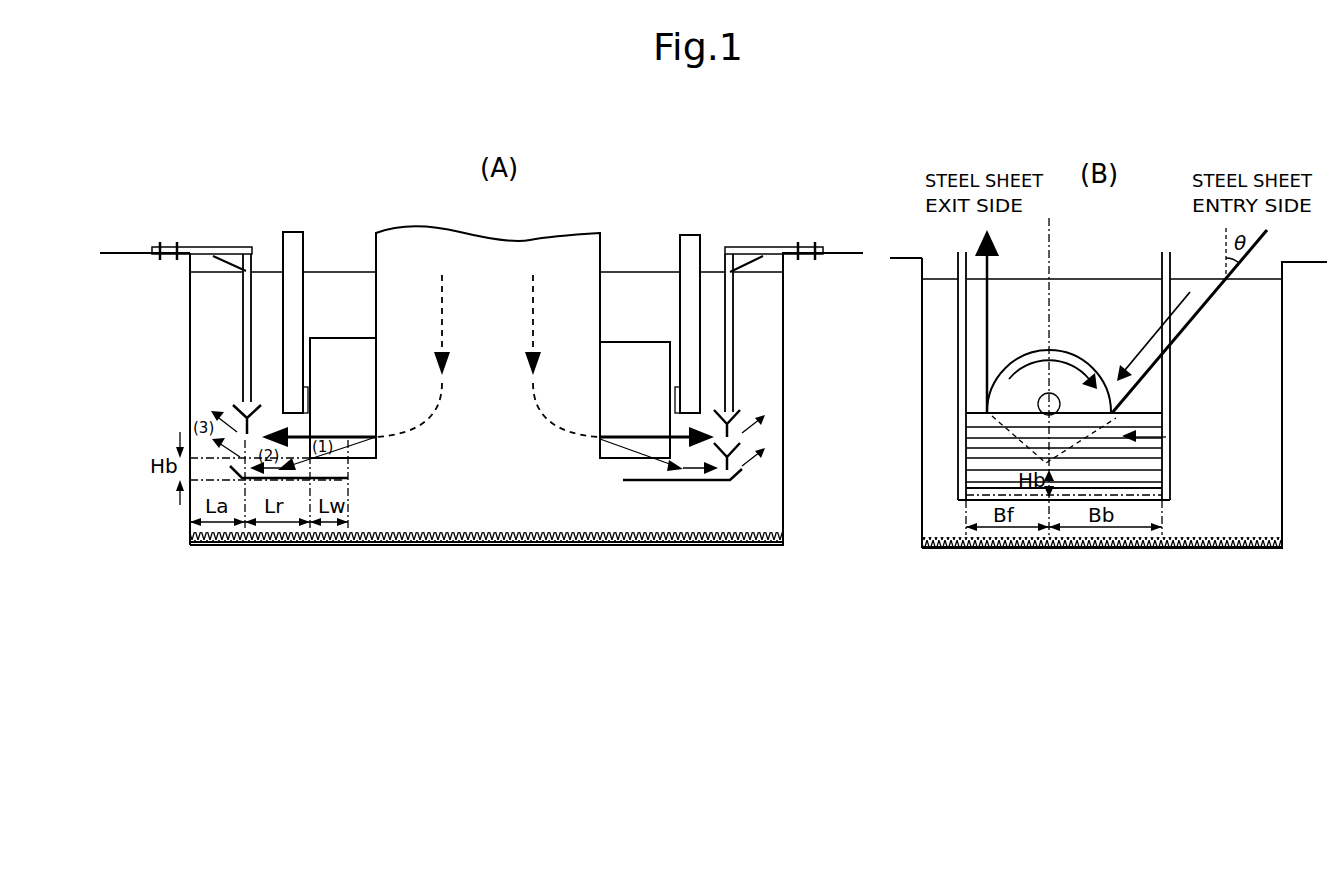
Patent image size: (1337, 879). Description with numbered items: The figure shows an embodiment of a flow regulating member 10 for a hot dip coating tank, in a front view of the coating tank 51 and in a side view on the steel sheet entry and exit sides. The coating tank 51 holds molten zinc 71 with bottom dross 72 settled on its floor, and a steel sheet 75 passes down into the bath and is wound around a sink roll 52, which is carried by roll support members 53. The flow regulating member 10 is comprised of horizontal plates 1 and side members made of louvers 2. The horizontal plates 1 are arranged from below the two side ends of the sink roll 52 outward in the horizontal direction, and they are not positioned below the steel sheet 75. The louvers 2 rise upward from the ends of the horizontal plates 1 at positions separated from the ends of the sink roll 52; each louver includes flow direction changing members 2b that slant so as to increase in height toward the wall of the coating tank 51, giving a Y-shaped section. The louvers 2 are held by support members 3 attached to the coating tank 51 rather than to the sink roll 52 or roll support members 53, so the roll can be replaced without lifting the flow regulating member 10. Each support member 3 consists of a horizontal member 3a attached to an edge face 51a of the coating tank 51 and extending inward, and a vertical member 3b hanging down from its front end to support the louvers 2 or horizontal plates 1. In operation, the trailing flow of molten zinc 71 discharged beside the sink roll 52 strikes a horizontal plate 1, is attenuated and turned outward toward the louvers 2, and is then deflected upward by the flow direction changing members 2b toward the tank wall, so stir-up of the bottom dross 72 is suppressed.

The horizontal plate 1 is at (336, 478).
The louver 2 is at (256, 400).
The flow direction changing member 2b is at (236, 405).
The support member 3 is at (233, 232).
The horizontal member 3a is at (199, 247).
The vertical member 3b is at (242, 307).
The flow regulating member 10 is at (746, 488).
The coating tank 51 is at (196, 395).
The edge face of the coating tank 51a is at (132, 252).
The sink roll 52 is at (336, 338).
The roll support member 53 is at (293, 335).
The molten zinc 71 is at (646, 326).
The bottom dross 72 is at (410, 534).
The steel sheet 75 is at (421, 323).